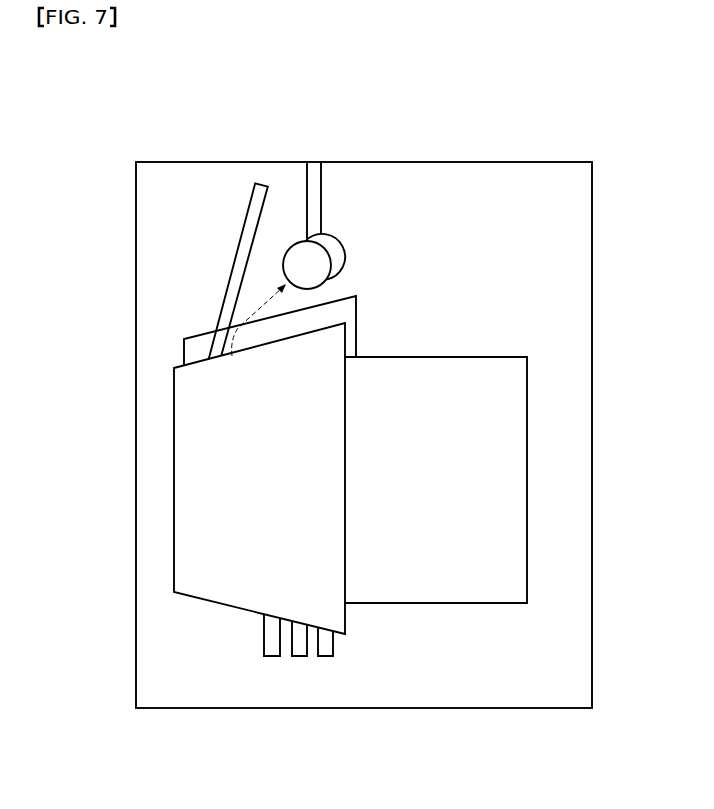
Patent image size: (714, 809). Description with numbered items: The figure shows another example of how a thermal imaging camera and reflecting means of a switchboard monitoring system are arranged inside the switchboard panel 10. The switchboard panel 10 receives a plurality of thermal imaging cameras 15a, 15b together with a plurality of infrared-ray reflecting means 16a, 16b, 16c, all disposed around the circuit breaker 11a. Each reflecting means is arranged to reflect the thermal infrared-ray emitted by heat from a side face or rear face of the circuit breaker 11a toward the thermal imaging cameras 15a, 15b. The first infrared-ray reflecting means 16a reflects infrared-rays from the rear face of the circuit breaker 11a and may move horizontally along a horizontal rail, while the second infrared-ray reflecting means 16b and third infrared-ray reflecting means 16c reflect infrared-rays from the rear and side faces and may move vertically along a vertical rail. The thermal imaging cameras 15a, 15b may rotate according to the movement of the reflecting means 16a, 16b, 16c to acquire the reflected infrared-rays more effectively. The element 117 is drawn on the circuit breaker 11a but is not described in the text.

The switchboard panel 10 is at (592, 181).
The circuit breaker 11a is at (418, 585).
The thermal imaging camera 15a is at (283, 263).
The thermal imaging camera 15b is at (338, 238).
The first infrared-ray reflecting means 16a is at (247, 210).
The second infrared-ray reflecting means 16b is at (195, 473).
The third infrared-ray reflecting means 16c is at (184, 339).
The terminals 117 is at (272, 656).